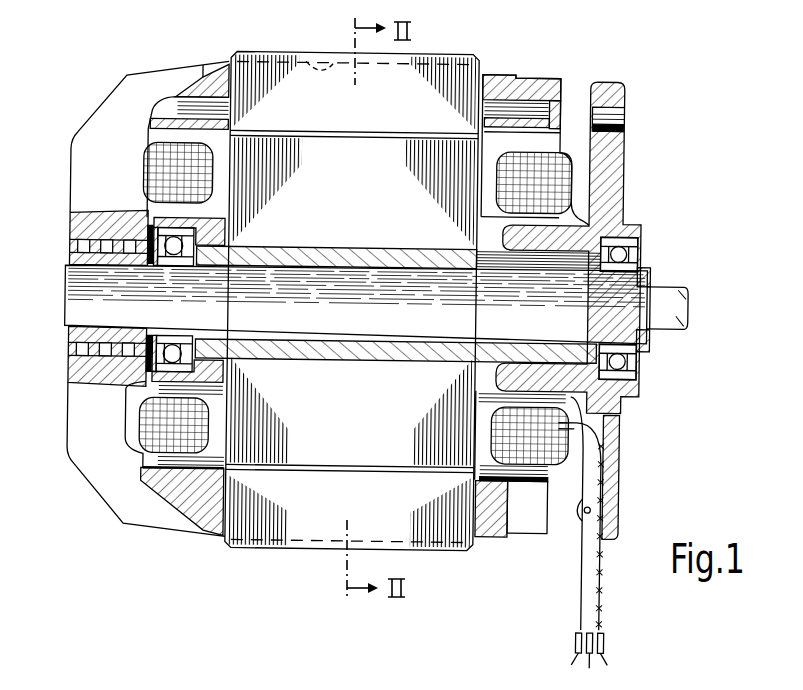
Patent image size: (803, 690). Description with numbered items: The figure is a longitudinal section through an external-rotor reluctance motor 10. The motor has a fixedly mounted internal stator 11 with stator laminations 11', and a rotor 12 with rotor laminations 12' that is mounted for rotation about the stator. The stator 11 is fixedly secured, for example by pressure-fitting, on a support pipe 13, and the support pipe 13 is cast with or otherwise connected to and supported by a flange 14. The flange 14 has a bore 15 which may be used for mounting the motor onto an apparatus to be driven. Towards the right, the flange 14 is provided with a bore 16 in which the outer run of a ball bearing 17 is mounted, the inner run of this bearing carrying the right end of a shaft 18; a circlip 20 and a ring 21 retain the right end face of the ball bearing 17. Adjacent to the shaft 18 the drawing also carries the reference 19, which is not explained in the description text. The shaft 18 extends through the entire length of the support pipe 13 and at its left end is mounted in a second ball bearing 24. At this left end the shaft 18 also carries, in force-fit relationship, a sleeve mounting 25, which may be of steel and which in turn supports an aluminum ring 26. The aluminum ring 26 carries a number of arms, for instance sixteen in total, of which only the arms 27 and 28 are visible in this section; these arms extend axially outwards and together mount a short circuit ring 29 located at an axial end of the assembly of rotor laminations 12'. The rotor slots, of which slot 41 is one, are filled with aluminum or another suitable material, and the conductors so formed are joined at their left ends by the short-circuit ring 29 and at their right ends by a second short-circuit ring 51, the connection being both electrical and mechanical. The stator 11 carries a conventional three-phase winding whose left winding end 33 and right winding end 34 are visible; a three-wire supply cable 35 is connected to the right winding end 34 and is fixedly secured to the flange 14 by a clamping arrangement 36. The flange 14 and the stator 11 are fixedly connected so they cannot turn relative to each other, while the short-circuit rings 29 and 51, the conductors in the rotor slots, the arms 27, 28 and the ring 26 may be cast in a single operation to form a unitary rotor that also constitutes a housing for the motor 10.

The external-rotor reluctance motor 10 is at (243, 42).
The internal stator 11 is at (545, 112).
The stator laminations 11' is at (352, 301).
The rotor 12 is at (351, 274).
The rotor laminations 12' is at (354, 96).
The support pipe 13 is at (630, 415).
The flange 14 is at (612, 182).
The bore 15 is at (628, 118).
The bore 16 is at (632, 373).
The ball bearing 17 is at (638, 255).
The shaft 18 is at (680, 326).
The shaft 19 is at (603, 322).
The circlip 20 is at (650, 281).
The ring 21 is at (643, 352).
The second ball bearing 24 is at (130, 442).
The sleeve mounting 25 is at (97, 372).
The aluminum ring 26 is at (80, 213).
The arm 27 is at (128, 108).
The arm 28 is at (113, 493).
The short circuit ring 29 is at (213, 85).
The left winding end 33 is at (177, 444).
The right winding end 34 is at (513, 455).
The three-wire supply cable 35 is at (601, 570).
The clamping arrangement 36 is at (581, 512).
The rotor slot 41 is at (306, 60).
The short-circuit ring 51 is at (511, 78).